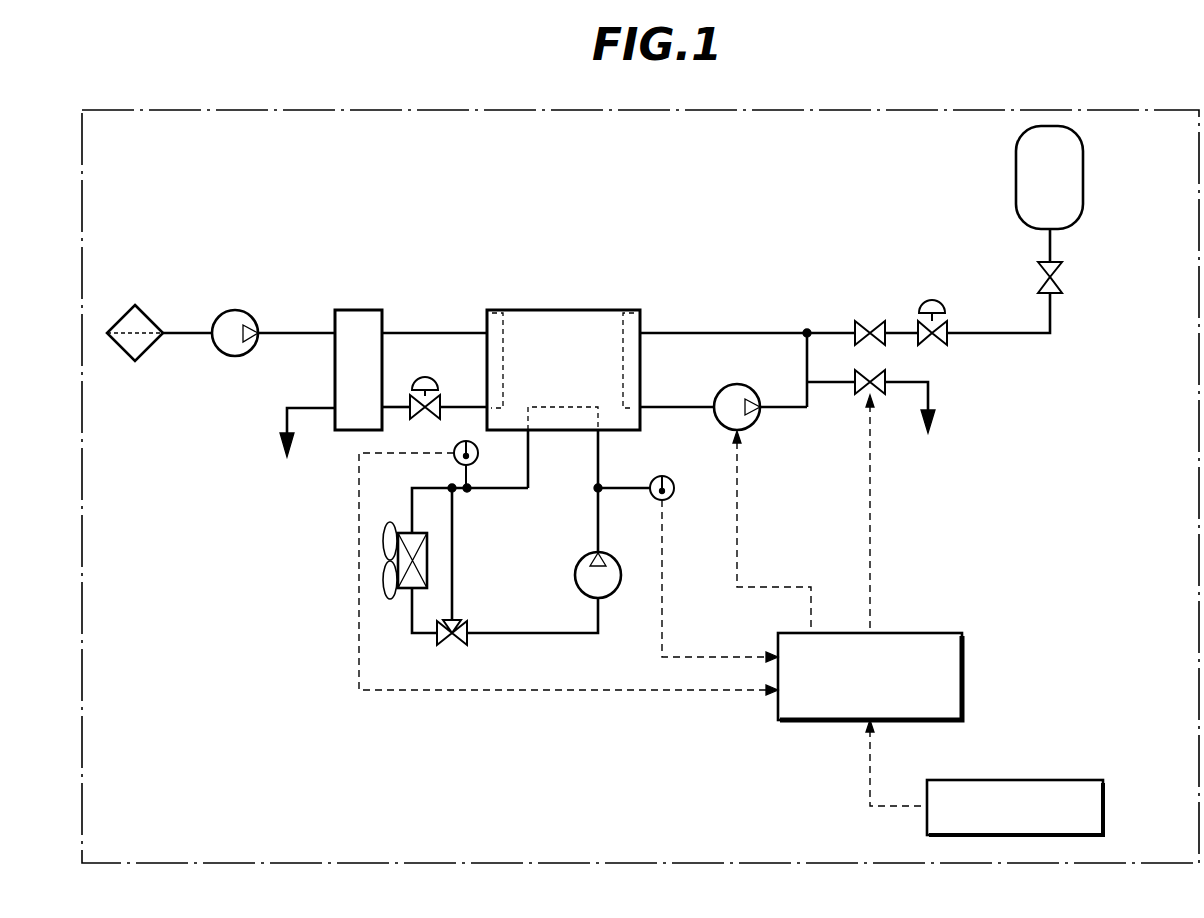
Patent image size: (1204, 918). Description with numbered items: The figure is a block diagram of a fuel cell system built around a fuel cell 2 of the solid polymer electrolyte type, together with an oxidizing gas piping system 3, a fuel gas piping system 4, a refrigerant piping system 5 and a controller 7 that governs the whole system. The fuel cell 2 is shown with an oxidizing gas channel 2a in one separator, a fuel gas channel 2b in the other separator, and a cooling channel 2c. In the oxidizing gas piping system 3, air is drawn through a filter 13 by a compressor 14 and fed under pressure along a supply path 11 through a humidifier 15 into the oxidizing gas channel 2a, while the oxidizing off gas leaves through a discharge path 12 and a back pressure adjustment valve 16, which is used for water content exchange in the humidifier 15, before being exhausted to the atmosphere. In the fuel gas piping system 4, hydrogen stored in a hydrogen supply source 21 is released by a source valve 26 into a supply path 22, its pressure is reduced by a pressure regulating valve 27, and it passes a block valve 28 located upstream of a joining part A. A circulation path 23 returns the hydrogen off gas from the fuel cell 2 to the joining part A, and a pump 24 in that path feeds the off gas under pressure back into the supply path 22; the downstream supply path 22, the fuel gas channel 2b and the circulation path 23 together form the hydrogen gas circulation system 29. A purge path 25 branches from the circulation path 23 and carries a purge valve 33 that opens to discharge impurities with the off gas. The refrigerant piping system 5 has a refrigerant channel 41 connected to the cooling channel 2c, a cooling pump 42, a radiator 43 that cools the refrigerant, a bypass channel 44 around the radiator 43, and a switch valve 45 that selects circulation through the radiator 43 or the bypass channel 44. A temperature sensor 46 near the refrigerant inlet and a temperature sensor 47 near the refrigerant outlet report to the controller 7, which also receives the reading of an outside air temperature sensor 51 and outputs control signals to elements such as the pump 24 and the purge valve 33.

The fuel cell 2 is at (550, 310).
The oxidizing gas channel 2a is at (497, 312).
The fuel gas channel 2b is at (628, 308).
The cooling channel 2c is at (563, 409).
The oxidizing gas piping system 3 is at (173, 396).
The fuel gas piping system 4 is at (735, 291).
The refrigerant piping system 5 is at (512, 555).
The controller 7 is at (921, 633).
The supply path 11 is at (292, 330).
The discharge path 12 is at (305, 410).
The filter 13 is at (146, 322).
The compressor 14 is at (235, 310).
The humidifier 15 is at (355, 310).
The back pressure adjustment valve 16 is at (430, 379).
The hydrogen supply source 21 is at (1085, 178).
The supply path 22 is at (1052, 309).
The circulation path 23 is at (785, 410).
The pump 24 is at (745, 431).
The purge path 25 is at (930, 390).
The source valve 26 is at (1060, 268).
The pressure regulating valve 27 is at (948, 322).
The block valve 28 is at (862, 320).
The hydrogen gas circulation system 29 is at (683, 331).
The purge valve 33 is at (855, 393).
The refrigerant channel 41 is at (545, 635).
The cooling pump 42 is at (612, 596).
The radiator 43 is at (390, 599).
The bypass channel 44 is at (452, 568).
The switch valve 45 is at (443, 645).
The temperature sensor 46 is at (668, 498).
The temperature sensor 47 is at (455, 464).
The outside air temperature sensor 51 is at (1040, 780).
The joining part A is at (808, 330).